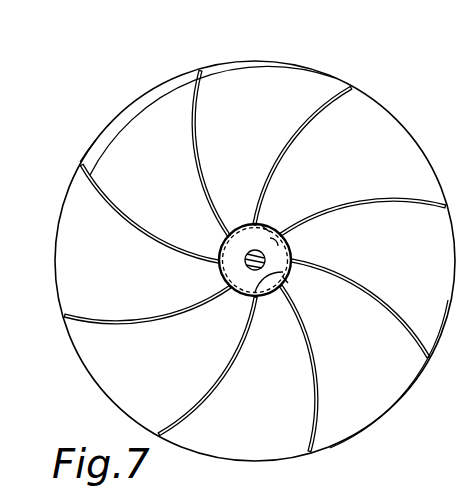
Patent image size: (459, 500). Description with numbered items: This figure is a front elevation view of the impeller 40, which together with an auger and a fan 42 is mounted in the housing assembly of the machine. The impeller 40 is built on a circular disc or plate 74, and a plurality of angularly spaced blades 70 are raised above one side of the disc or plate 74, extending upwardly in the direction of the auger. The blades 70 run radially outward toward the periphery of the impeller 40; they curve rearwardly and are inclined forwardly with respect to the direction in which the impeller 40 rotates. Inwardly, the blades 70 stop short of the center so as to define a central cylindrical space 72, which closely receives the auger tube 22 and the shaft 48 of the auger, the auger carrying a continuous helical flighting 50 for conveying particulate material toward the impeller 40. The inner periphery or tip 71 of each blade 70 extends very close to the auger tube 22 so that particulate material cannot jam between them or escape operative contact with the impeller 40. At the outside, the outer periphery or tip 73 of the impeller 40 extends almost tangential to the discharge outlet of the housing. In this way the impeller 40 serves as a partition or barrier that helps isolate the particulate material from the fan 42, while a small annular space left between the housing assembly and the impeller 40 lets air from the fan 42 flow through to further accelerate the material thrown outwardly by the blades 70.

The impeller 40 is at (230, 56).
The fan 42 is at (133, 96).
The auger tube 22 is at (222, 236).
The shaft 48 is at (268, 258).
The continuous helical flighting 50 is at (276, 254).
The blades 70 is at (191, 148).
The inner periphery or tip 71 is at (268, 228).
The central cylindrical space 72 is at (236, 306).
The outer periphery or tip 73 is at (80, 160).
The disc or plate 74 is at (372, 408).